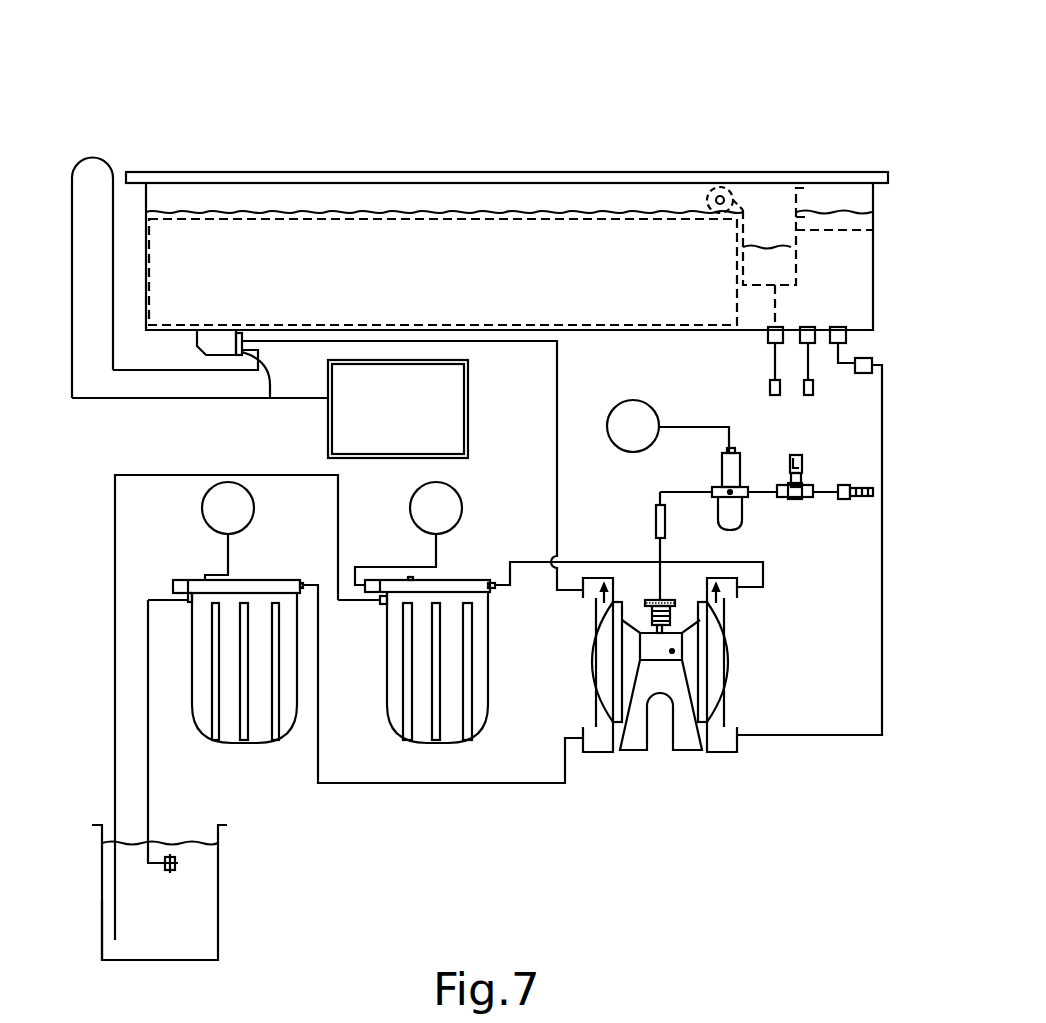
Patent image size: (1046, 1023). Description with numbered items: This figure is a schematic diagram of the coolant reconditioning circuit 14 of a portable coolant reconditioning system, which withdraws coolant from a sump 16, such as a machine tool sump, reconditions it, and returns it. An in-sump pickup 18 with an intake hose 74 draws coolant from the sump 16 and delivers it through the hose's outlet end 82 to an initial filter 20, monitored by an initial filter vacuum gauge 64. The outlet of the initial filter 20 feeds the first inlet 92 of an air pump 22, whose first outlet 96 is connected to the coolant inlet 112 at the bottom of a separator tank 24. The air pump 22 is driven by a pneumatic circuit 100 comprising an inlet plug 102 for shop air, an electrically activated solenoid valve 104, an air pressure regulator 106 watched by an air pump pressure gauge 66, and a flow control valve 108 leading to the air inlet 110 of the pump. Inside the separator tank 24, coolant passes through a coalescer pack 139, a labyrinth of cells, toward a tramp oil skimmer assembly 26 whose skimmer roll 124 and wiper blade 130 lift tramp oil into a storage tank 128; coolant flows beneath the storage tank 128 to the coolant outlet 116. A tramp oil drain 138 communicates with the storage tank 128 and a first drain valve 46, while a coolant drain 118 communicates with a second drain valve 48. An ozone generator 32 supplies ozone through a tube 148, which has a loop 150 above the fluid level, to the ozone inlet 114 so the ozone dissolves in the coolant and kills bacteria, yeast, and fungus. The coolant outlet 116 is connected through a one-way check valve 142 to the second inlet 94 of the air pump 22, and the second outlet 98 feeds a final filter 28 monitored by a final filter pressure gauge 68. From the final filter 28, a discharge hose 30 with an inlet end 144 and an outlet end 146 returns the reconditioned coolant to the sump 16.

The coolant reconditioning circuit 14 is at (308, 80).
The sump 16 is at (218, 920).
The in-sump pickup 18 is at (140, 716).
The initial filter 20 is at (243, 743).
The air pump 22 is at (670, 671).
The separator tank 24 is at (497, 173).
The tramp oil skimmer assembly 26 is at (720, 172).
The final filter 28 is at (437, 743).
The discharge hose 30 is at (115, 643).
The ozone generator 32 is at (468, 398).
The first drain valve 46 is at (770, 388).
The second drain valve 48 is at (808, 395).
The initial filter vacuum gauge 64 is at (202, 503).
The air pump pressure gauge 66 is at (616, 408).
The final filter pressure gauge 68 is at (460, 500).
The intake hose 74 is at (147, 775).
The outlet end 82 is at (180, 600).
The first inlet 92 is at (578, 750).
The second inlet 94 is at (740, 748).
The first outlet 96 is at (583, 595).
The second outlet 98 is at (738, 593).
The pneumatic circuit 100 is at (772, 516).
The inlet plug 102 is at (857, 497).
The solenoid valve 104 is at (796, 455).
The air pressure regulator 106 is at (722, 472).
The flow control valve 108 is at (655, 520).
The air inlet 110 is at (657, 595).
The coolant inlet 112 is at (242, 338).
The ozone inlet 114 is at (268, 394).
The coolant outlet 116 is at (847, 335).
The coolant drain 118 is at (808, 327).
The skimmer roll 124 is at (698, 194).
The storage tank 128 is at (873, 230).
The wiper blade 130 is at (757, 195).
The tramp oil drain 138 is at (767, 337).
The coalescer pack 139 is at (392, 220).
The one-way check valve 142 is at (862, 373).
The inlet end 144 is at (367, 600).
The outlet end 146 is at (113, 920).
The tube 148 is at (200, 398).
The loop 150 is at (92, 157).